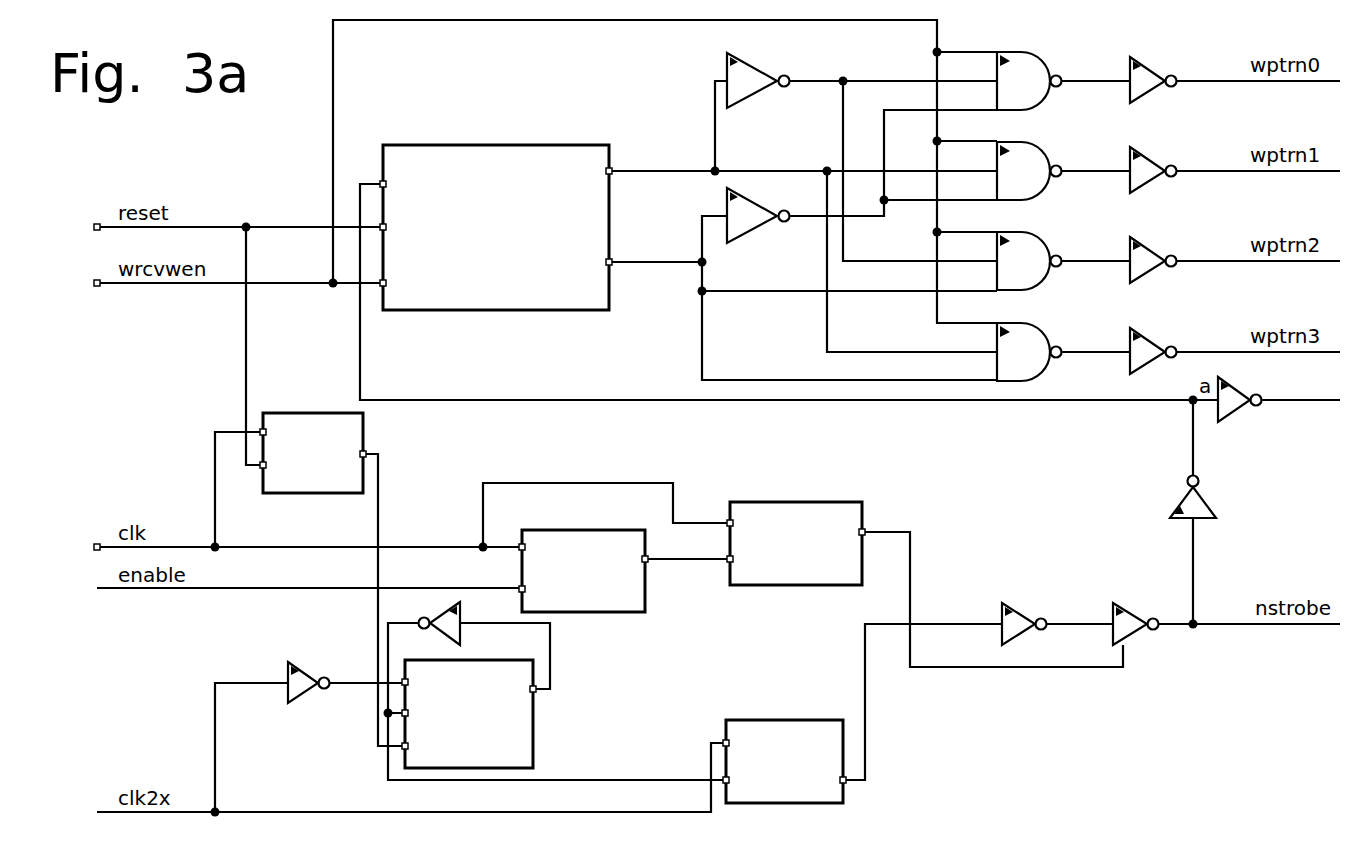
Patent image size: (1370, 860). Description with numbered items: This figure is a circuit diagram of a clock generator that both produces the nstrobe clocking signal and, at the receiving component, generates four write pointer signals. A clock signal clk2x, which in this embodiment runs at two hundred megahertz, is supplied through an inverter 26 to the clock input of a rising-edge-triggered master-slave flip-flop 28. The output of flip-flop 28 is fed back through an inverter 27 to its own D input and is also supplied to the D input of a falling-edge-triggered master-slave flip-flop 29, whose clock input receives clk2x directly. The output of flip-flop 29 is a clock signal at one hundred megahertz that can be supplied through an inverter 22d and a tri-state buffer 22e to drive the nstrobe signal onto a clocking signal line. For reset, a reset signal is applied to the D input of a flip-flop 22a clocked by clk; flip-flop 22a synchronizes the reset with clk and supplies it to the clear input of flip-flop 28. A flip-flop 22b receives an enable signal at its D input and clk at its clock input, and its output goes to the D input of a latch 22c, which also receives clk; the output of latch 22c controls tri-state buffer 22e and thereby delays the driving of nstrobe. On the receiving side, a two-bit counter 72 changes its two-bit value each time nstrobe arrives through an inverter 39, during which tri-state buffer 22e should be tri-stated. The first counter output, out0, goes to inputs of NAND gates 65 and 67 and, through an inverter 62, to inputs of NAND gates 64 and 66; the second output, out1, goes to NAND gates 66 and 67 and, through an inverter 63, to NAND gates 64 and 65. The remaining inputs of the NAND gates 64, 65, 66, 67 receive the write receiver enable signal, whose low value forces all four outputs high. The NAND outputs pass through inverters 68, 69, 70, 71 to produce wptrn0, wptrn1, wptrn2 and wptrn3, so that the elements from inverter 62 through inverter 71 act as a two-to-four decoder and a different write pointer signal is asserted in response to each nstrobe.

The two-bit counter 72 is at (495, 145).
The inverter 62 is at (761, 93).
The inverter 63 is at (761, 228).
The NAND gate 64 is at (1033, 54).
The NAND gate 65 is at (1033, 144).
The NAND gate 66 is at (1033, 234).
The NAND gate 67 is at (1033, 325).
The inverter 68 is at (1148, 62).
The inverter 69 is at (1148, 152).
The inverter 70 is at (1148, 242).
The inverter 71 is at (1148, 333).
The flip-flop 22a is at (314, 413).
The flip-flop 22b is at (628, 613).
The latch 22c is at (797, 502).
The inverter 22d is at (1018, 602).
The tri-state buffer 22e is at (1130, 602).
The inverter 26 is at (306, 661).
The inverter 27 is at (462, 608).
The rising-edge-triggered master-slave flip-flop 28 is at (535, 755).
The falling-edge-triggered master-slave flip-flop 29 is at (747, 720).
The inverter 39 is at (1180, 497).